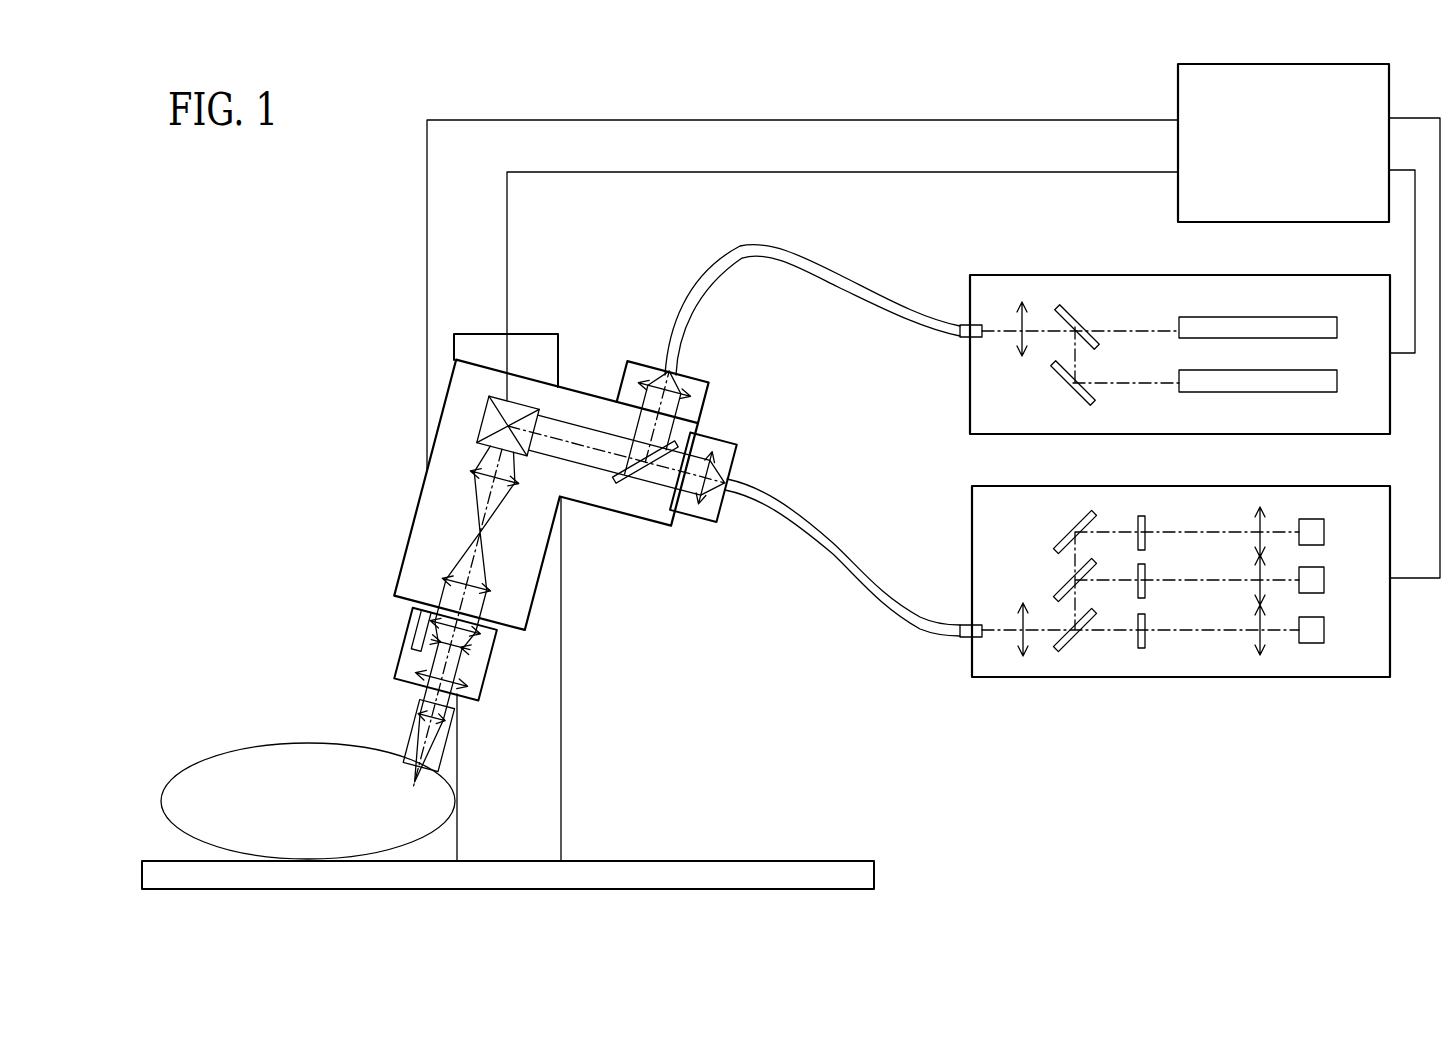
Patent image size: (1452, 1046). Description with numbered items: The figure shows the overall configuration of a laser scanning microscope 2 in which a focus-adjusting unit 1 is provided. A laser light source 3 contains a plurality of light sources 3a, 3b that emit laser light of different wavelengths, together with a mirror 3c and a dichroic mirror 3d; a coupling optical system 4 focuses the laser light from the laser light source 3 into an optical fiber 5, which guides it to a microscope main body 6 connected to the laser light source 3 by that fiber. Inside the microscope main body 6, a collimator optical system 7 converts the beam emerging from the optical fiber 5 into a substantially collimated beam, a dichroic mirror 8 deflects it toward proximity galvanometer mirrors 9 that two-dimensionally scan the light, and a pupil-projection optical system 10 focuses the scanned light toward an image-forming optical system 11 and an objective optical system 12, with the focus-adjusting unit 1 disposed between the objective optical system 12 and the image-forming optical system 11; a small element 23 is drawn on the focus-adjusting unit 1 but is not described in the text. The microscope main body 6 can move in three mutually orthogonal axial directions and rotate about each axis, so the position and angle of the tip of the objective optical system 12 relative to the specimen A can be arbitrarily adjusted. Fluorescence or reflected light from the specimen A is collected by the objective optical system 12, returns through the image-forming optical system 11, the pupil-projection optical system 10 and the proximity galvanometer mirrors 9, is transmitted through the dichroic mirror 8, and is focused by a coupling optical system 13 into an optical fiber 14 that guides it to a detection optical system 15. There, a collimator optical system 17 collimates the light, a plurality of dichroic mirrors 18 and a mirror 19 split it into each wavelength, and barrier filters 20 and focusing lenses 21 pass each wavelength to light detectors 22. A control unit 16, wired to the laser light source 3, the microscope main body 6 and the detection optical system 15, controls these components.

The focus-adjusting unit 1 is at (400, 665).
The microscope 2 is at (359, 98).
The laser light source 3 is at (970, 383).
The light source 3a is at (1223, 317).
The light source 3b is at (1293, 392).
The mirror 3c is at (1066, 380).
The dichroic mirror 3d is at (1066, 313).
The coupling optical system 4 is at (1022, 302).
The optical fiber 5 is at (840, 272).
The microscope main body 6 is at (378, 322).
The collimator optical system 7 is at (691, 397).
The dichroic mirror 8 is at (632, 482).
The proximity galvanometer mirrors 9 is at (518, 402).
The pupil-projection optical system 10 is at (519, 482).
The image-forming optical system 11 is at (490, 592).
The objective optical system 12 is at (410, 733).
The coupling optical system 13 is at (716, 455).
The optical fiber 14 is at (832, 540).
The detection optical system 15 is at (1205, 677).
The control unit 16 is at (1178, 90).
The collimator optical system 17 is at (1018, 652).
The dichroic mirrors 18 is at (1065, 588).
The mirror 19 is at (1065, 537).
The barrier filters 20 is at (1145, 524).
The focusing lenses 21 is at (1256, 522).
The light detectors 22 is at (1325, 533).
The sensor 23 is at (413, 630).
The specimen A is at (197, 782).